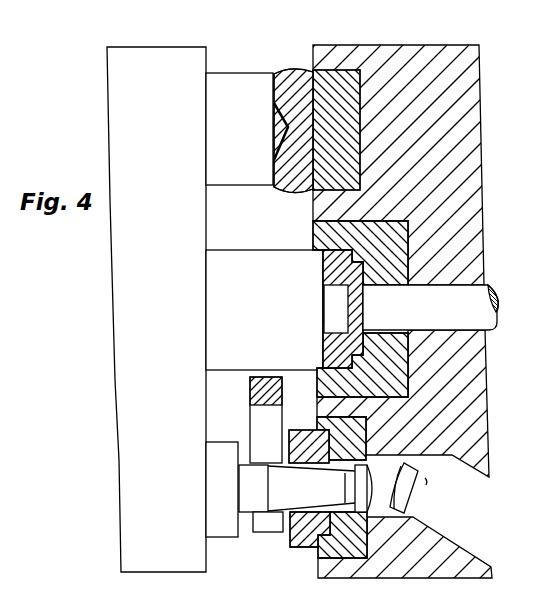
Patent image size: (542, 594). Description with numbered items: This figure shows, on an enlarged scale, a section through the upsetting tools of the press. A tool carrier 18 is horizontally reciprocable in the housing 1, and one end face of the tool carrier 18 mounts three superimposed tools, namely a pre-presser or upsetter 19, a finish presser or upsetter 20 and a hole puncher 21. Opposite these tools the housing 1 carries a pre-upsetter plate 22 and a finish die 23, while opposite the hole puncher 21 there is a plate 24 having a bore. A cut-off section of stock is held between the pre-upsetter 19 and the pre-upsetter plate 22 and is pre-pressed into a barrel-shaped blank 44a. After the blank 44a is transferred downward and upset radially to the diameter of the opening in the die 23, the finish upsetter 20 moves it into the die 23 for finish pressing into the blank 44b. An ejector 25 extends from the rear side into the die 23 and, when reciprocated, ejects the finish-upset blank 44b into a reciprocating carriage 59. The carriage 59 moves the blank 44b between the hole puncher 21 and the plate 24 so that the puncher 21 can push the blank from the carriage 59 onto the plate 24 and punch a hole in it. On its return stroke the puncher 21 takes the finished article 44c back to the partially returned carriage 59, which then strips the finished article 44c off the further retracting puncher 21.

The housing 1 is at (472, 95).
The tool carrier 18 is at (187, 70).
The pre-presser or upsetter 19 is at (240, 87).
The finish presser or upsetter 20 is at (238, 262).
The hole puncher 21 is at (223, 450).
The pre-upsetter plate 22 is at (338, 80).
The finish die 23 is at (328, 238).
The plate 24 is at (335, 427).
The ejector 25 is at (482, 292).
The barrel-shaped blank 44a is at (292, 87).
The blank 44b is at (333, 361).
The finished article 44c is at (310, 541).
The reciprocating carriage 59 is at (273, 519).